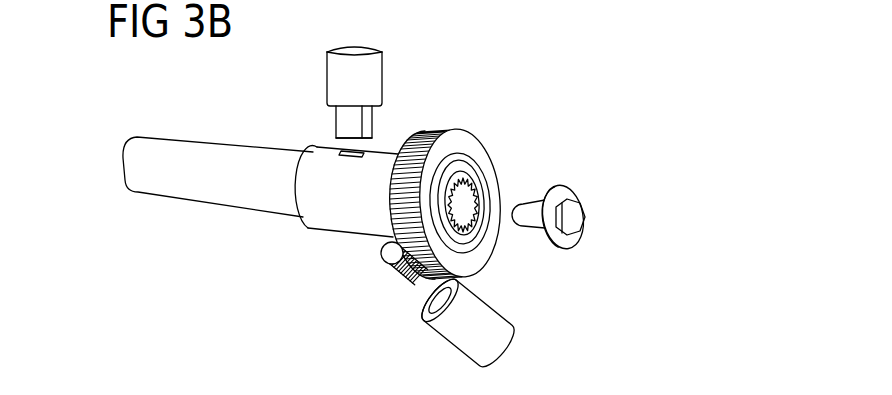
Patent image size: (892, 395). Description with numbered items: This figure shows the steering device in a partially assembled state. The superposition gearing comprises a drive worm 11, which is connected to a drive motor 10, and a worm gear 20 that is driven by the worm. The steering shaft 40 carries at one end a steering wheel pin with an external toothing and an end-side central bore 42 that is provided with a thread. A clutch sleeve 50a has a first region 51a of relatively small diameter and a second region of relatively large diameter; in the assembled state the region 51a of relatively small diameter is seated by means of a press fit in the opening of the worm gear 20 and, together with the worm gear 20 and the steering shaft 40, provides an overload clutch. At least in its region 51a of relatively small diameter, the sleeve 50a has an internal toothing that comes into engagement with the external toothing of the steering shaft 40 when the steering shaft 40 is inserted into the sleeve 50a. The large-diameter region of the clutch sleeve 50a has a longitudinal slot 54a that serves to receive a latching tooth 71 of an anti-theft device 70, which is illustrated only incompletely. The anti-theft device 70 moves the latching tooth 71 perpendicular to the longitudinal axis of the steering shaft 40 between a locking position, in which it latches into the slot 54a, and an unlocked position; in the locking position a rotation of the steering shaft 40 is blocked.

The drive motor 10 is at (450, 336).
The drive worm 11 is at (403, 278).
The worm gear 20 is at (477, 145).
The steering shaft 40 is at (205, 204).
The central bore 42 is at (475, 221).
The clutch sleeve 50a is at (333, 234).
The first region of relatively small diameter 51a is at (473, 197).
The longitudinal slot 54a is at (338, 150).
The anti-theft device 70 is at (370, 65).
The latching tooth 71 is at (368, 122).